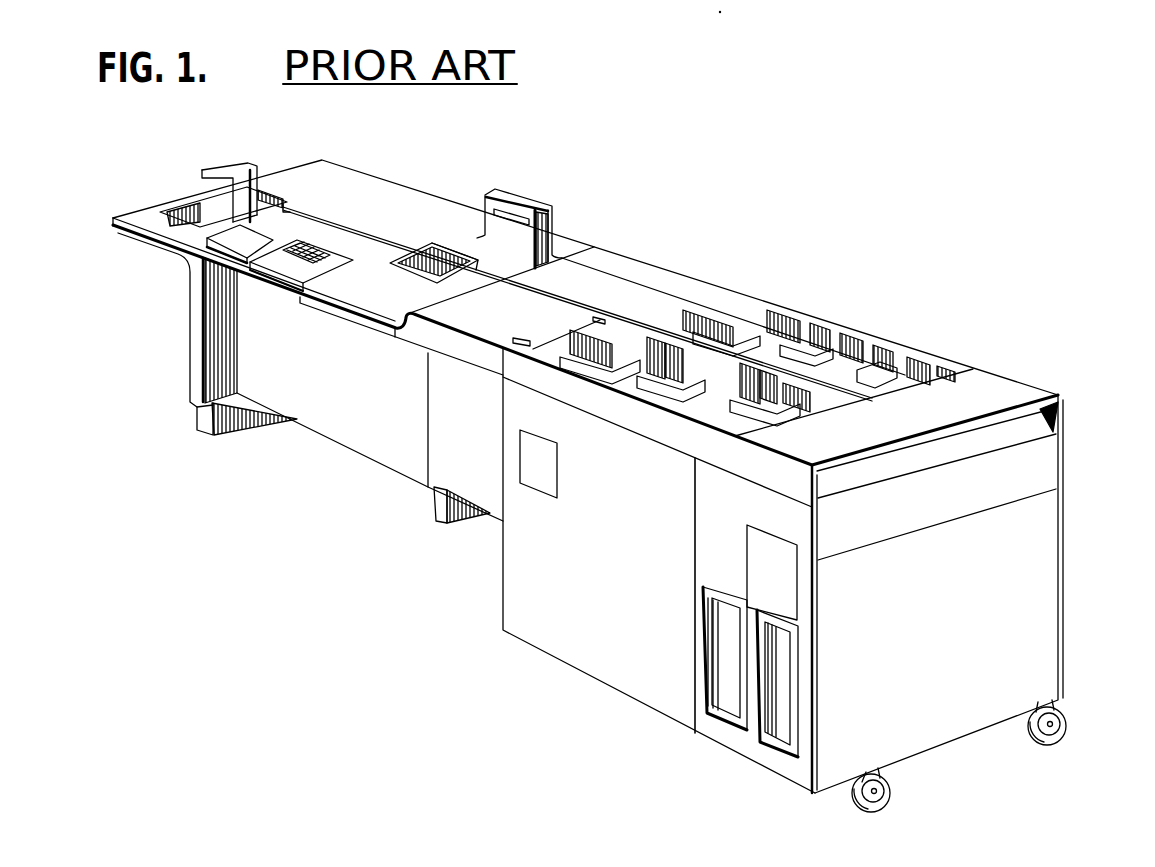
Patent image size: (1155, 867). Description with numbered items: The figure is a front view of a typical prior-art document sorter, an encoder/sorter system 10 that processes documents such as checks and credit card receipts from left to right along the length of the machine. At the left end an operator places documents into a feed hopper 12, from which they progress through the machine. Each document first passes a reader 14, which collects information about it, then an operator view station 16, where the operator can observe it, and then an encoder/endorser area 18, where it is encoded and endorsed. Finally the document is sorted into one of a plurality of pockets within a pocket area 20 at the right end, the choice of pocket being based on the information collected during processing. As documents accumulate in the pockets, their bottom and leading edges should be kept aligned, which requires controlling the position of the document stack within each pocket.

The encoder/sorter system 10 is at (226, 646).
The feed hopper 12 is at (222, 220).
The reader 14 is at (425, 253).
The operator view station 16 is at (532, 226).
The encoder/endorser area 18 is at (607, 302).
The pocket area 20 is at (842, 338).